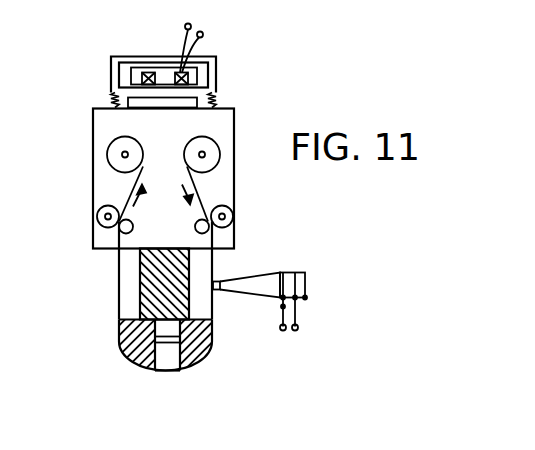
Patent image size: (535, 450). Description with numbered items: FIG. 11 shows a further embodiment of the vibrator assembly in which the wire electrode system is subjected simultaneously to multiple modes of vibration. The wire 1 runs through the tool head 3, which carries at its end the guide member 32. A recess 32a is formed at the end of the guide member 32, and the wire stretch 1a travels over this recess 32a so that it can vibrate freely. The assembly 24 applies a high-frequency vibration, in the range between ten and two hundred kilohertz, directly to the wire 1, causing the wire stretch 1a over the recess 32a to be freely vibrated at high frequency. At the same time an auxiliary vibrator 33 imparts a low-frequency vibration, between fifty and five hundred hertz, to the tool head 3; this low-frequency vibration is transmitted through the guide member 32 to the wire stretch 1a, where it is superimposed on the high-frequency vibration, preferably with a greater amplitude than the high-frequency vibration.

The tool head 3 is at (93, 172).
The auxiliary vibrator 33 is at (212, 73).
The wire 1 is at (120, 284).
The assembly 24 is at (262, 273).
The guide member 32 is at (127, 350).
The recess 32a is at (168, 358).
The wire stretch 1a is at (165, 373).